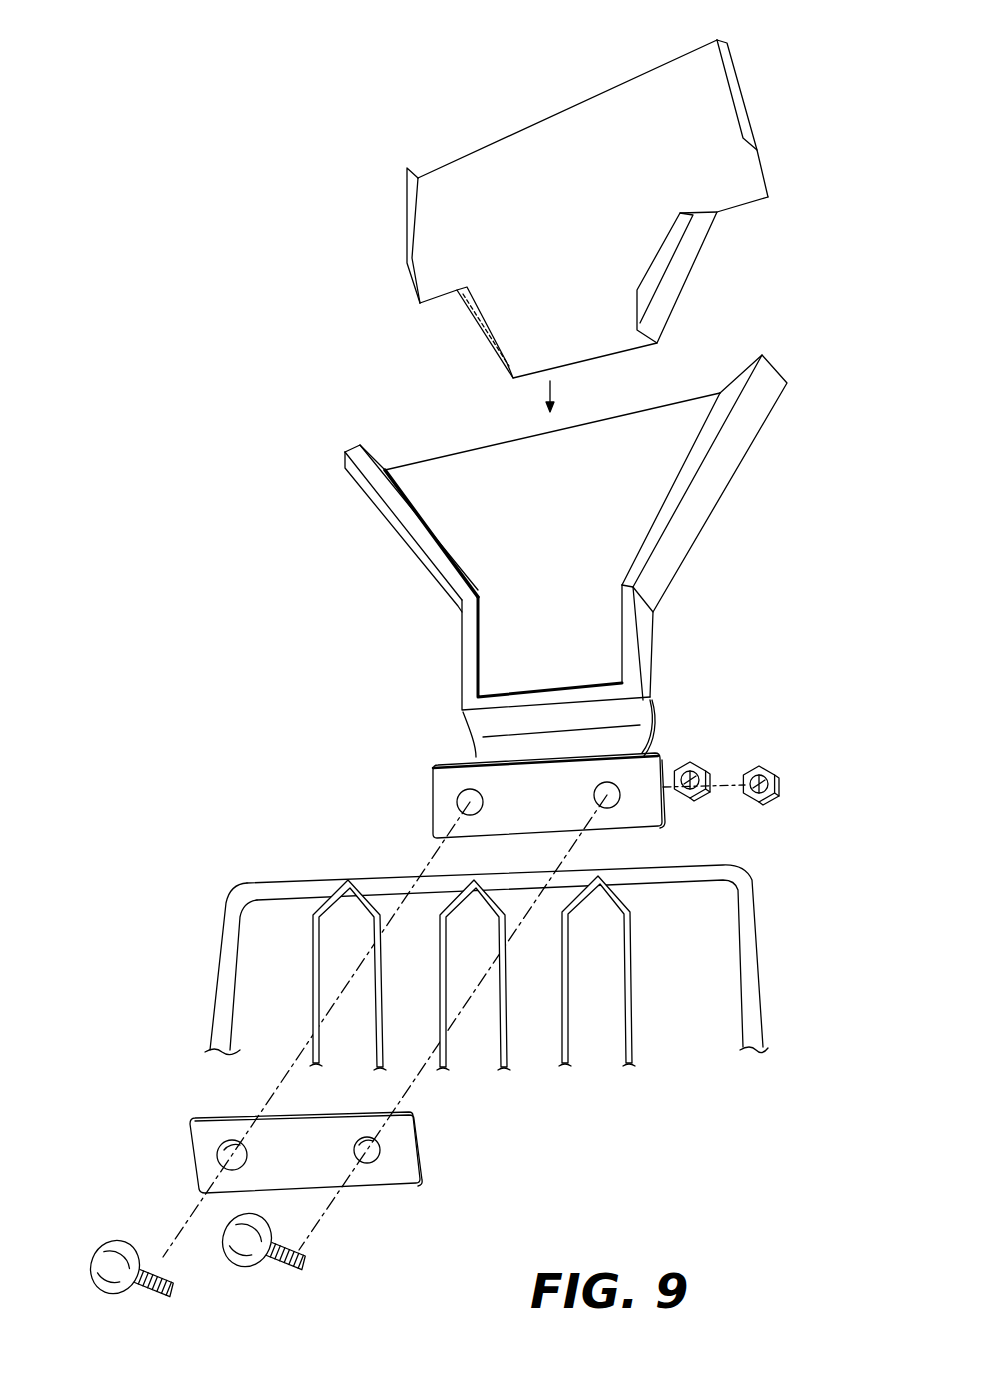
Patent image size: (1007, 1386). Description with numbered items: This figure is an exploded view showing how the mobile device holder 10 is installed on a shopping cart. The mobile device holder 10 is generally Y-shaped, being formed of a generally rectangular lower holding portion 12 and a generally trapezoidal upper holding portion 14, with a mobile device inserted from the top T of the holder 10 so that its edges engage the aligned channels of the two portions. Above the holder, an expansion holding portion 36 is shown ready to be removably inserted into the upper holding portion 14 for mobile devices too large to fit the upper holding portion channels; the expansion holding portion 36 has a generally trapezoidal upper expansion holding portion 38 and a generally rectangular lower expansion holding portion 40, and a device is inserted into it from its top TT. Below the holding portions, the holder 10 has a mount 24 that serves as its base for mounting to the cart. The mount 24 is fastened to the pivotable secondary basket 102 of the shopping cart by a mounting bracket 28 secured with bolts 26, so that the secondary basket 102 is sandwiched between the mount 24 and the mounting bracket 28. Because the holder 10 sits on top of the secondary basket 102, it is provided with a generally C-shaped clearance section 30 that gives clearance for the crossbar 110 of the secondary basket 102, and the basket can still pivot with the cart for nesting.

The mobile device holder 10 is at (564, 552).
The lower holding portion 12 is at (470, 652).
The upper holding portion 14 is at (748, 428).
The mount 24 is at (492, 827).
The bolts 26 is at (127, 1243).
The mounting bracket 28 is at (417, 1123).
The clearance section 30 is at (635, 718).
The expansion holding portion 36 is at (615, 209).
The upper expansion holding portion 38 is at (740, 70).
The lower expansion holding portion 40 is at (687, 275).
The secondary basket 102 is at (508, 952).
The crossbar 110 is at (543, 882).
The top of the holder T is at (672, 398).
The top of the expansion holding portion TT is at (540, 128).